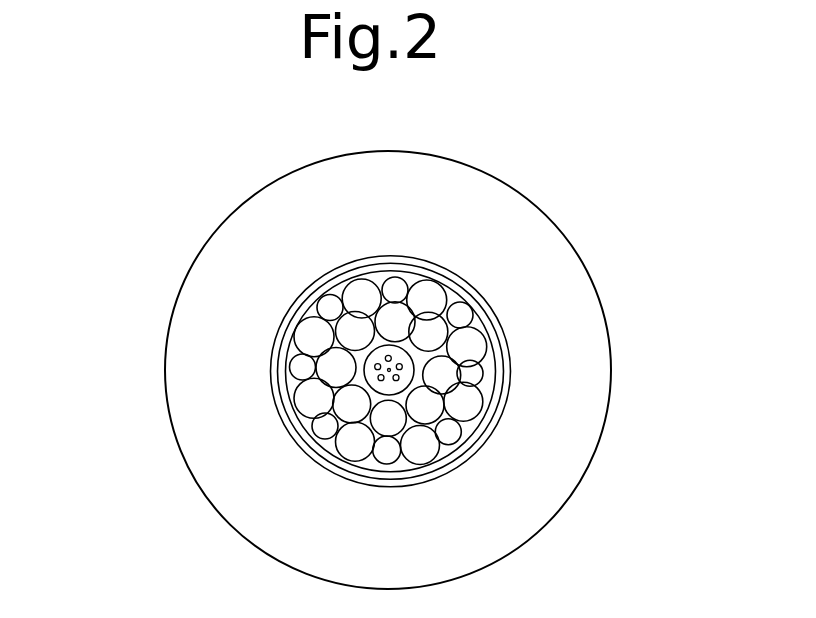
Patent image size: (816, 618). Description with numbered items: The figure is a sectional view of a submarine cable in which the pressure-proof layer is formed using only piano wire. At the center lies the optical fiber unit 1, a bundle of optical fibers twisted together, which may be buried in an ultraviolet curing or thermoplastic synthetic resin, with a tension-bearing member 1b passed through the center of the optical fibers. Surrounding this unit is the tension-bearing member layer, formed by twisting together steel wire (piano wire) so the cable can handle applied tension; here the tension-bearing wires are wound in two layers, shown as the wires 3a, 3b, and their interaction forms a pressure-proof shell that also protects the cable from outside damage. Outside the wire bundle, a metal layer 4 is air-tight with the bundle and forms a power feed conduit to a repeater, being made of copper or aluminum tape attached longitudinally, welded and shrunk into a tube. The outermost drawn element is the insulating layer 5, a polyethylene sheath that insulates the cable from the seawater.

The optical fiber unit 1 is at (414, 374).
The tension-bearing member 1b is at (395, 360).
The optical fiber unit (loose tube) 3a is at (352, 328).
The filler rod 3b is at (393, 283).
The metal layer 4 is at (300, 398).
The insulating layer 5 is at (238, 482).